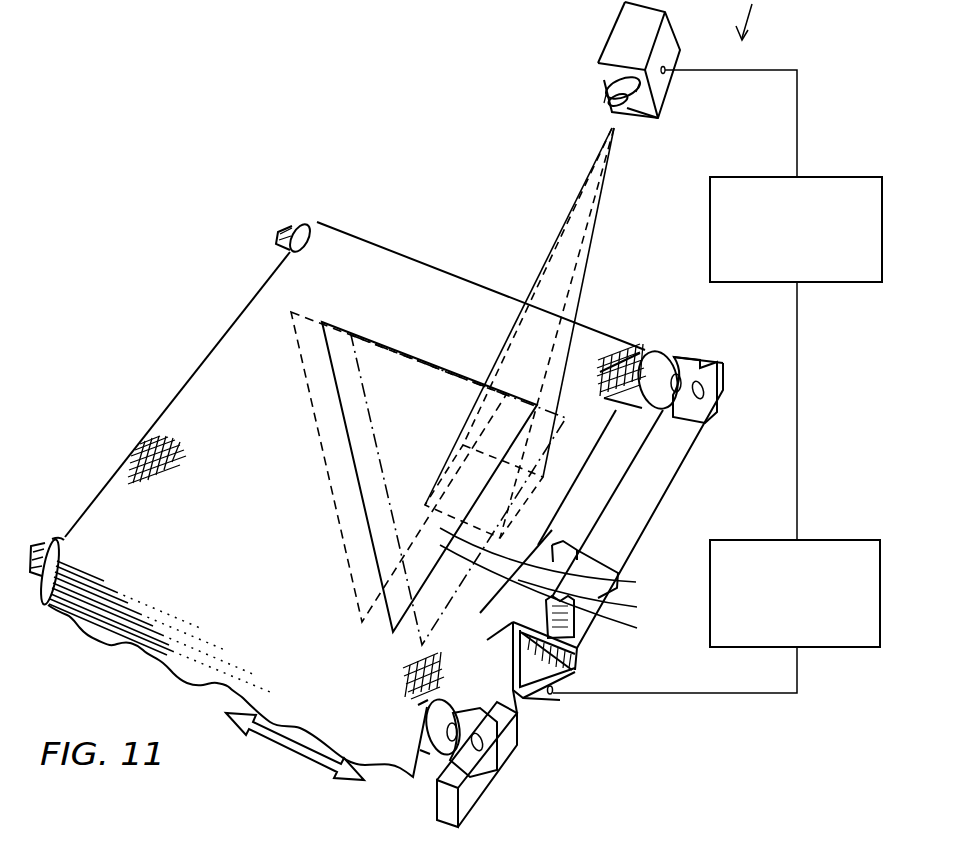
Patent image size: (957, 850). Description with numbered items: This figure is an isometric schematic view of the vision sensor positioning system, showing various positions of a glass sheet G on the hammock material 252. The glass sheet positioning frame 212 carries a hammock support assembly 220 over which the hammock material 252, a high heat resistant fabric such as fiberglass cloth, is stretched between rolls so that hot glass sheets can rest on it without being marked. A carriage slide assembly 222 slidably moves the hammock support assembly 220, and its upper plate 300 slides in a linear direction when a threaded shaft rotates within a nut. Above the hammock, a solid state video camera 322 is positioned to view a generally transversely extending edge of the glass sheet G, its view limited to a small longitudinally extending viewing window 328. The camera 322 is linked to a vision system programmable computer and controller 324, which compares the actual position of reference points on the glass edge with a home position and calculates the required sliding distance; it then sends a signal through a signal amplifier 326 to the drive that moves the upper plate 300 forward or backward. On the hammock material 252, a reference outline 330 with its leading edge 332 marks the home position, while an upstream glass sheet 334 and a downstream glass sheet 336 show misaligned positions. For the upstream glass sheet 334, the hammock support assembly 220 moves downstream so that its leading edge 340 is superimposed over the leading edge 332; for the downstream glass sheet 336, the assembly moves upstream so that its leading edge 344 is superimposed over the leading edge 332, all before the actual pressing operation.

The solid state video camera 322 is at (611, 31).
The vision system programmable computer and controller 324 is at (796, 229).
The signal amplifier 326 is at (795, 593).
The hammock material 252 is at (165, 418).
The glass sheet G is at (405, 350).
The reference outline 330 is at (336, 388).
The downstream glass sheet 336 is at (302, 362).
The upstream glass sheet 334 is at (369, 413).
The viewing window 328 is at (547, 480).
The glass sheet positioning frame 212 is at (709, 433).
The upper plate 300 is at (527, 695).
The carriage slide assembly 222 is at (575, 676).
The leading edge 332 is at (557, 562).
The leading edge 340 is at (596, 600).
The leading edge 344 is at (557, 593).
The hammock support assembly 220 is at (497, 773).